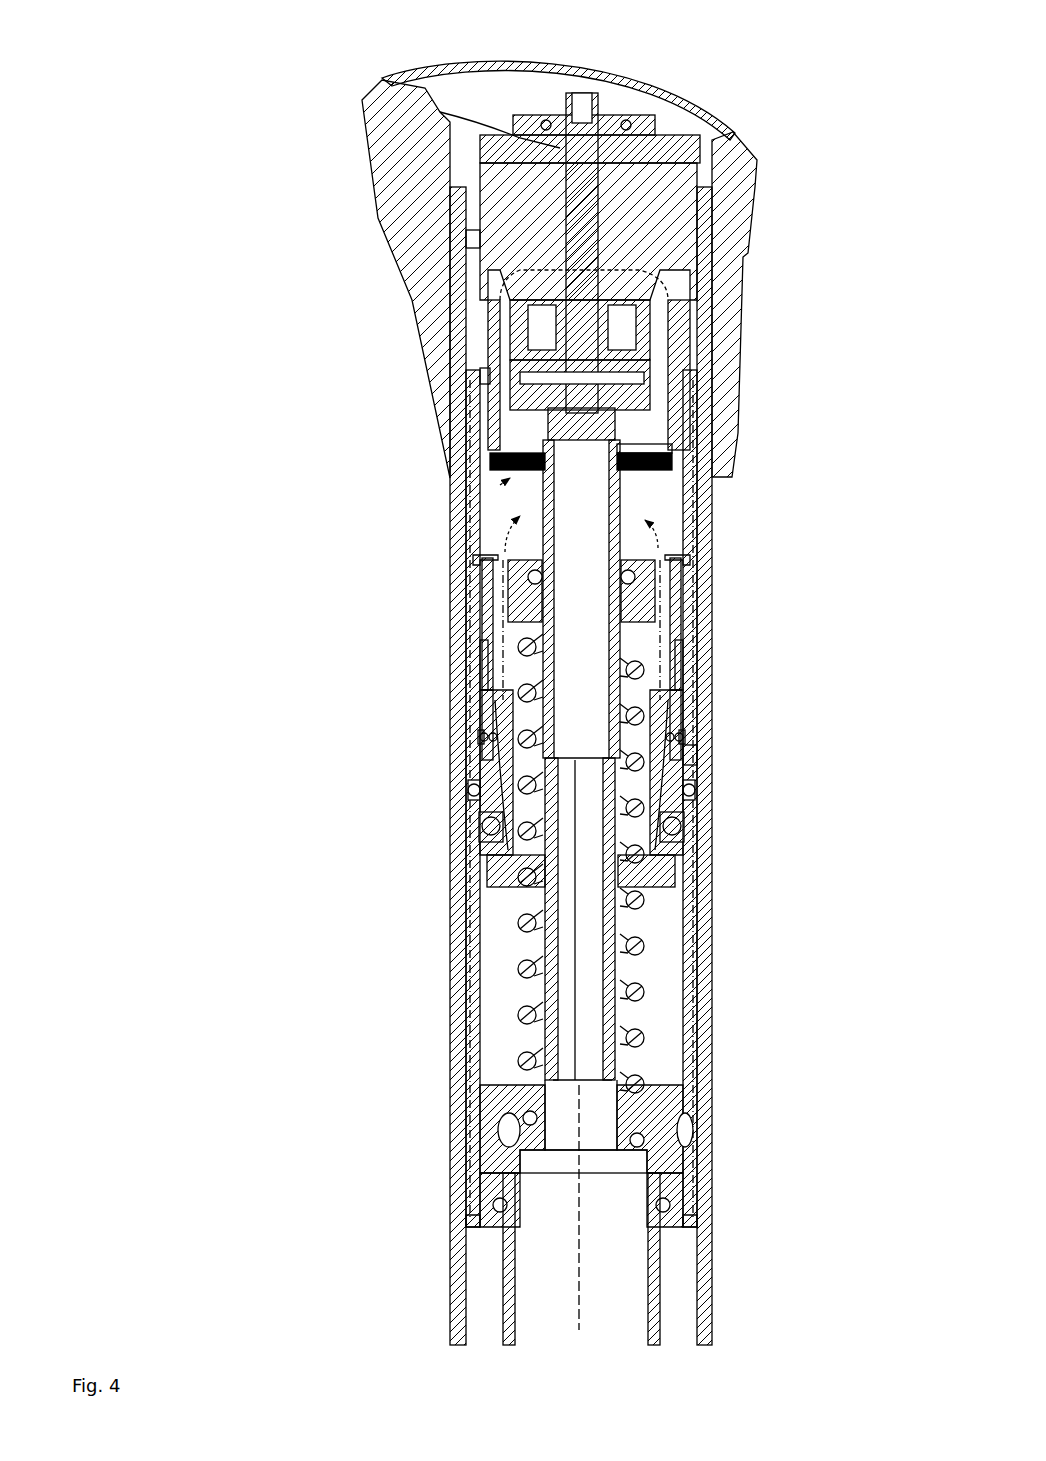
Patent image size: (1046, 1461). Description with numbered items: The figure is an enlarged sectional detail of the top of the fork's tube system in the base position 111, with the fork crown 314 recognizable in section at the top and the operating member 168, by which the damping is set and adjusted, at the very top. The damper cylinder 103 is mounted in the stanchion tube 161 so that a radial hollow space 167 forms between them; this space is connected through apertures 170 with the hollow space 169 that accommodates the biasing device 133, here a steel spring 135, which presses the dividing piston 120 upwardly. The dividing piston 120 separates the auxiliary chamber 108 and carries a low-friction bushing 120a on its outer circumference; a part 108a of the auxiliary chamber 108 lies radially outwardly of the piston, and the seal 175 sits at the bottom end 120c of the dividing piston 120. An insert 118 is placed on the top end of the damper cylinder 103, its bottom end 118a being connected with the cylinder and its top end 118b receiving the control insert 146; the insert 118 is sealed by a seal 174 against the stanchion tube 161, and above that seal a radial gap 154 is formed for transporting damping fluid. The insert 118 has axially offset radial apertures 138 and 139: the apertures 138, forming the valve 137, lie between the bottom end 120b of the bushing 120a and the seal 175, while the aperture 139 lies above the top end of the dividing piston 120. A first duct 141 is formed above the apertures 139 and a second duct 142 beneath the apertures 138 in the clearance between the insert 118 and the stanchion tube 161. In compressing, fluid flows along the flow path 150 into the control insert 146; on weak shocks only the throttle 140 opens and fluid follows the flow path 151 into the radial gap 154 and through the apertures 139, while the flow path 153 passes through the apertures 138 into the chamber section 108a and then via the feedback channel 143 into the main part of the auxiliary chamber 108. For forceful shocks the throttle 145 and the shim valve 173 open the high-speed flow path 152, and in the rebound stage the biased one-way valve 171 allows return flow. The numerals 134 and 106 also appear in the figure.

The operating member 168 is at (583, 60).
The base position 111 is at (777, 105).
The fork crown 314 is at (365, 97).
The control insert 146 is at (468, 236).
The throttle for low speed 140 is at (630, 235).
The flow path 151 is at (478, 305).
The first duct 141 is at (688, 318).
The flow path for high speeds 152 is at (497, 352).
The top end of the insert 118b is at (485, 377).
The radial gap 154 is at (497, 402).
The insert 118 is at (470, 443).
The biased one-way valve 171 is at (648, 436).
The flow path 134 is at (498, 507).
The throttle 145 is at (495, 483).
The shim valve 173 is at (652, 476).
The auxiliary chamber 108 is at (497, 519).
The apertures 139 is at (650, 517).
The low-friction bushing 120a is at (486, 576).
The second duct 142 is at (683, 572).
The feedback channel 143 is at (505, 613).
The dividing piston 120 is at (395, 628).
The flow path 153 is at (478, 657).
The part of the auxiliary chamber 108a is at (478, 717).
The bottom end of the low-friction bushing 120b is at (683, 718).
The apertures 138 is at (490, 738).
The valve 137 is at (715, 737).
The seal 174 is at (690, 790).
The seal 175 is at (672, 826).
The bottom end of the dividing piston 120c is at (490, 902).
The flow path 150 is at (575, 950).
The biasing device 133 is at (655, 955).
The hollow space 169 is at (498, 973).
The steel spring 135 is at (640, 1000).
The apertures 170 is at (510, 1130).
The bottom end of the insert 118a is at (475, 1213).
The stanchion tube 161 is at (465, 1248).
The damper cylinder 103 is at (655, 1290).
The radial hollow space 167 is at (488, 1337).
The axis 106 is at (630, 1333).